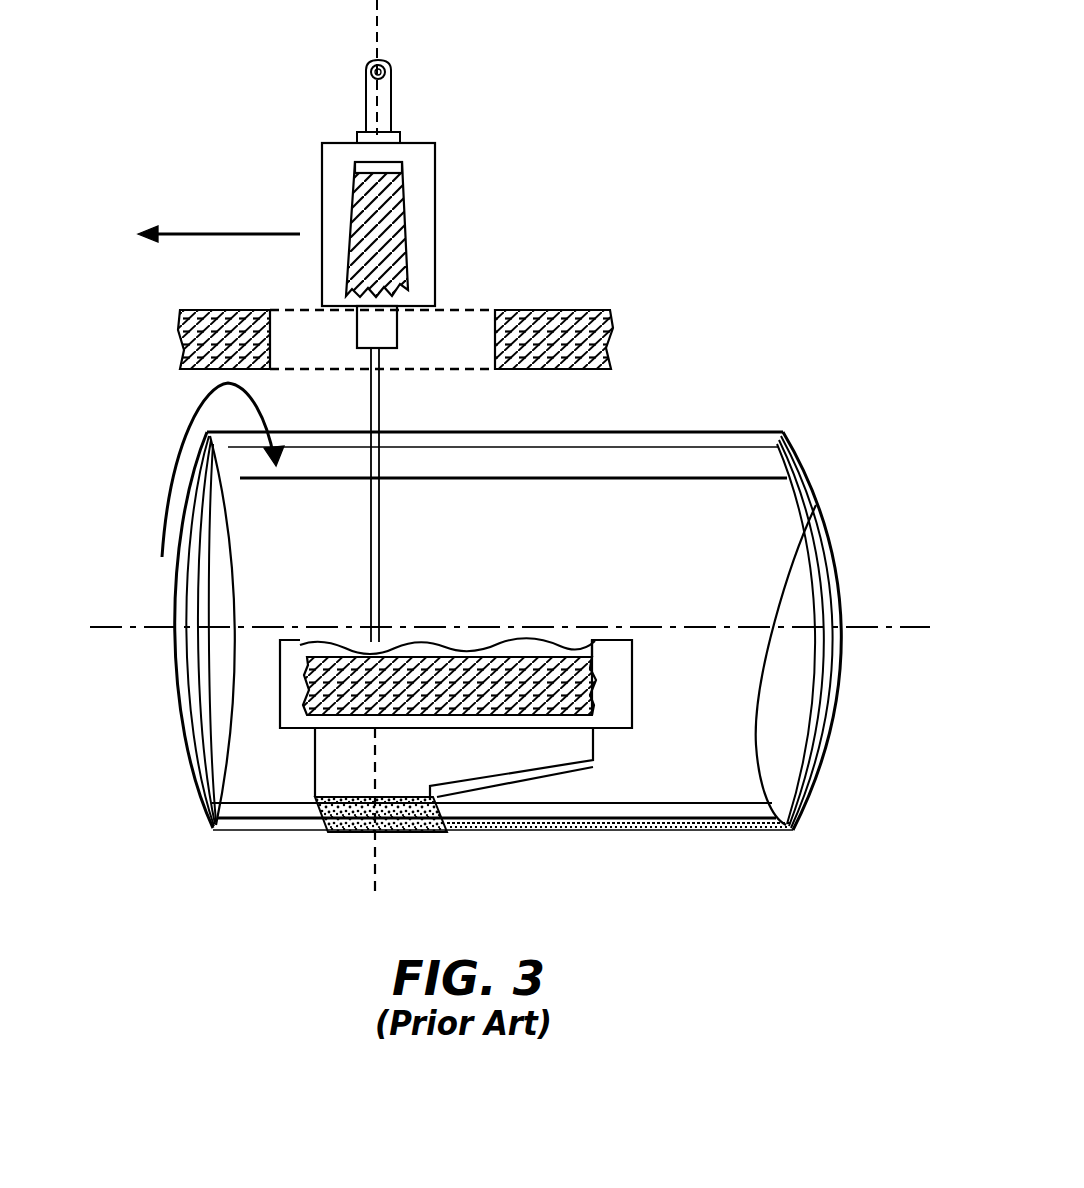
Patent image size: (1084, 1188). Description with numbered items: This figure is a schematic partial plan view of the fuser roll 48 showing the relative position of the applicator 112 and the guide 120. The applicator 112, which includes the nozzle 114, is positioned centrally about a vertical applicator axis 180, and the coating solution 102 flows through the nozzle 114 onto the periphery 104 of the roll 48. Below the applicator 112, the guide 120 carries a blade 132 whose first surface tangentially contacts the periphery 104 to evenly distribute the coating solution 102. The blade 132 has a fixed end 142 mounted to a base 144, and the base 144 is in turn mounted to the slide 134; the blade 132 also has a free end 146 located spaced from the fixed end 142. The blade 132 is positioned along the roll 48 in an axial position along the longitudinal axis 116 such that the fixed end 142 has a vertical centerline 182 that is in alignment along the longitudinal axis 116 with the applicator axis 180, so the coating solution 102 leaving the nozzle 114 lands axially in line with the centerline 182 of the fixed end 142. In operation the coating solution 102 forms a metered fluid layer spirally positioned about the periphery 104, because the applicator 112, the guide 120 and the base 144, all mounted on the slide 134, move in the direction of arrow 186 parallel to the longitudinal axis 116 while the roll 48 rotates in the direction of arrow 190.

The fuser roll 48 is at (508, 589).
The coating solution 102 is at (370, 414).
The periphery 104 is at (567, 432).
The applicator 112 is at (450, 181).
The nozzle 114 is at (392, 377).
The longitudinal axis 116 is at (112, 627).
The guide 120 is at (490, 640).
The blade 132 is at (541, 770).
The slide 134 is at (406, 292).
The fixed end 142 is at (340, 730).
The base 144 is at (624, 692).
The free end 146 is at (332, 826).
The vertical applicator axis 180 is at (379, 15).
The vertical centerline 182 is at (380, 855).
The arrow 186 is at (248, 234).
The arrow 190 is at (193, 409).